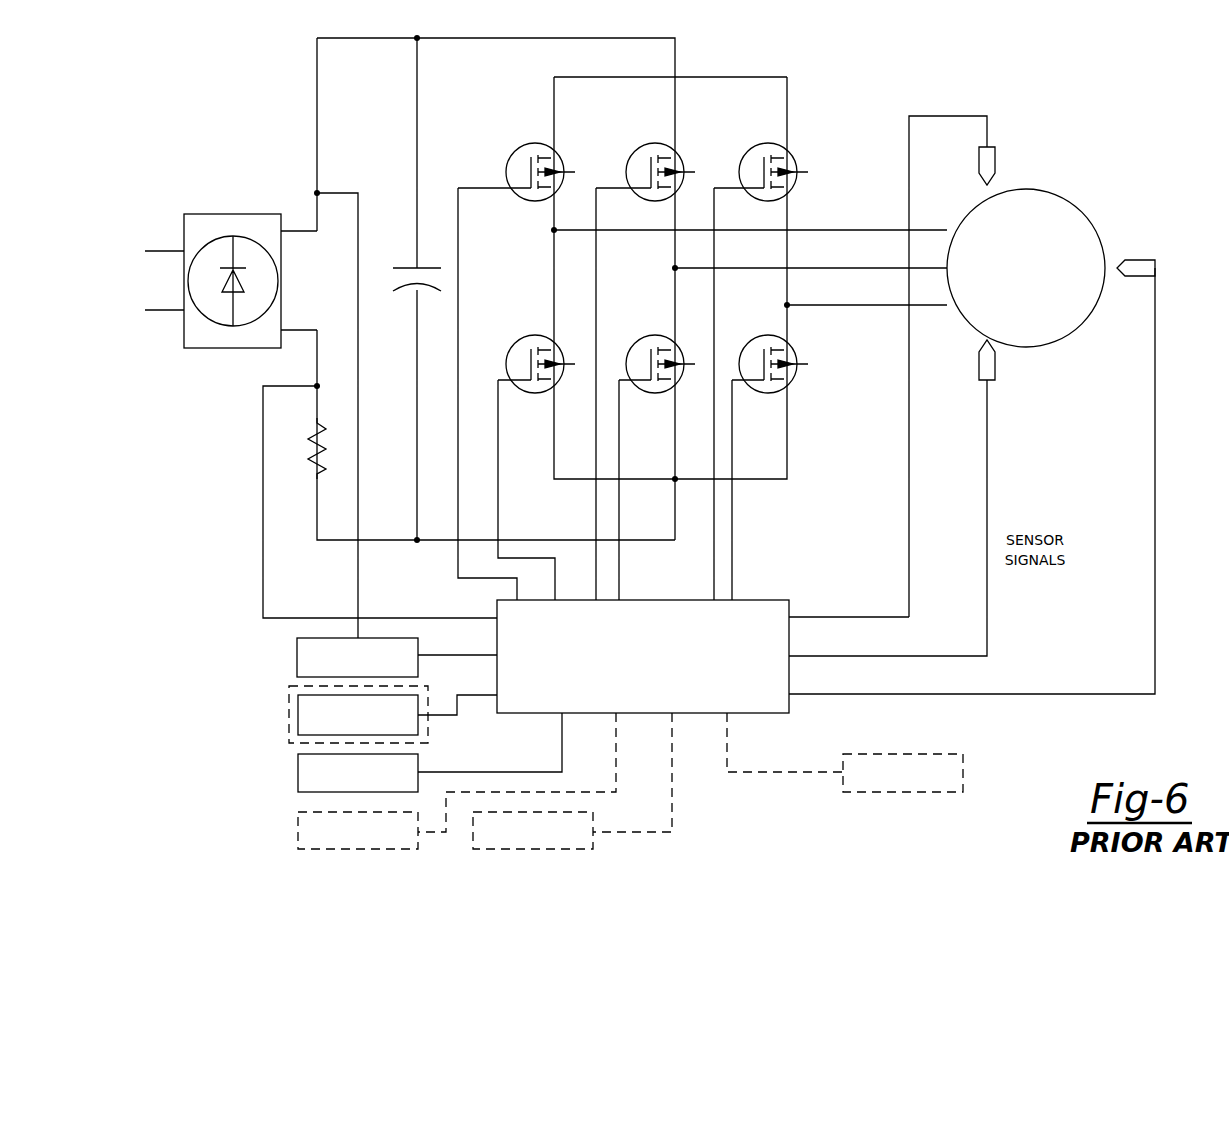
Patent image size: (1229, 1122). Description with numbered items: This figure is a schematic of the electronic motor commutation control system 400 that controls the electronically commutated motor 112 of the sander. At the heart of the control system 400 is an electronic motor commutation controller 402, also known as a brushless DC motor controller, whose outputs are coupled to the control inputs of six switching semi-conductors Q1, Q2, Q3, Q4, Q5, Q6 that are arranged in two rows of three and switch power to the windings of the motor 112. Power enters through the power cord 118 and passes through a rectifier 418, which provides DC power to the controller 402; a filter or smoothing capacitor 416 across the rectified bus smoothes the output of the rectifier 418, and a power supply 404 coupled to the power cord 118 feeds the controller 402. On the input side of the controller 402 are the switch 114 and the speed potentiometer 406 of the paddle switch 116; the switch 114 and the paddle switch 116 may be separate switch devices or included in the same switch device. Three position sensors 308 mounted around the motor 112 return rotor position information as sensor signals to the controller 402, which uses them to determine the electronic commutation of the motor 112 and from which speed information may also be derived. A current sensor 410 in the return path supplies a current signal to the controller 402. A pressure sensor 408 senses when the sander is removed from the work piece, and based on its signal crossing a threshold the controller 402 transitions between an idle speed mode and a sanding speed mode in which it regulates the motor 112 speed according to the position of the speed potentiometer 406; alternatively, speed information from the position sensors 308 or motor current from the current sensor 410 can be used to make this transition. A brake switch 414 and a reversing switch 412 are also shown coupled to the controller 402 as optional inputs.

The electronic motor commutation control system 400 is at (918, 92).
The power cord 118 is at (159, 228).
The rectifier 418 is at (226, 213).
The filter or smoothing capacitor 416 is at (409, 266).
The switching semi-conductor Q1 is at (509, 160).
The switching semi-conductor Q2 is at (630, 160).
The switching semi-conductor Q3 is at (743, 160).
The switching semi-conductor Q4 is at (509, 352).
The switching semi-conductor Q5 is at (630, 352).
The switching semi-conductor Q6 is at (743, 352).
The motor 112 is at (1058, 192).
The position sensors 308 is at (995, 165).
The current sensor 410 is at (306, 470).
The electronic motor commutation controller 402 is at (783, 598).
The power supply 404 is at (297, 655).
The paddle switch 116 is at (289, 692).
The speed potentiometer 406 is at (298, 728).
The switch 114 is at (298, 775).
The brake switch 414 is at (298, 835).
The reversing switch 412 is at (593, 833).
The pressure sensor 408 is at (963, 772).